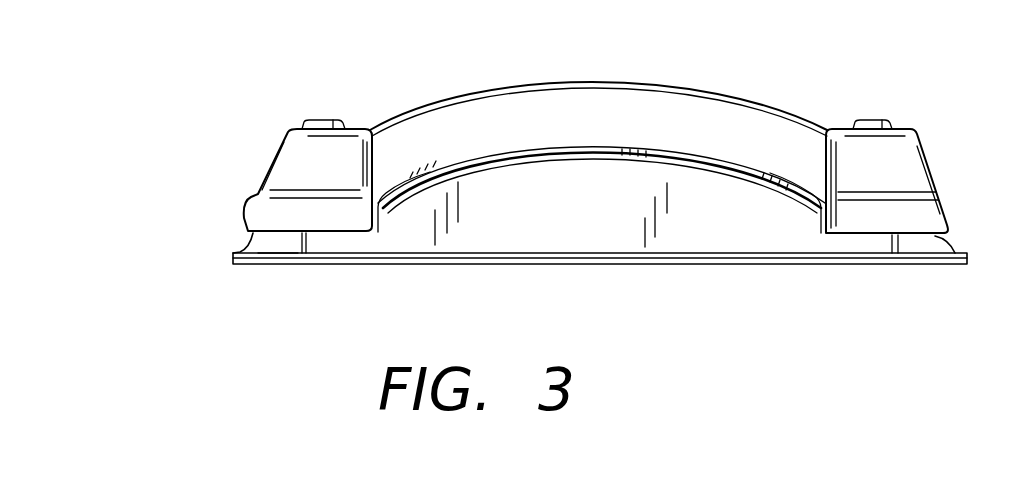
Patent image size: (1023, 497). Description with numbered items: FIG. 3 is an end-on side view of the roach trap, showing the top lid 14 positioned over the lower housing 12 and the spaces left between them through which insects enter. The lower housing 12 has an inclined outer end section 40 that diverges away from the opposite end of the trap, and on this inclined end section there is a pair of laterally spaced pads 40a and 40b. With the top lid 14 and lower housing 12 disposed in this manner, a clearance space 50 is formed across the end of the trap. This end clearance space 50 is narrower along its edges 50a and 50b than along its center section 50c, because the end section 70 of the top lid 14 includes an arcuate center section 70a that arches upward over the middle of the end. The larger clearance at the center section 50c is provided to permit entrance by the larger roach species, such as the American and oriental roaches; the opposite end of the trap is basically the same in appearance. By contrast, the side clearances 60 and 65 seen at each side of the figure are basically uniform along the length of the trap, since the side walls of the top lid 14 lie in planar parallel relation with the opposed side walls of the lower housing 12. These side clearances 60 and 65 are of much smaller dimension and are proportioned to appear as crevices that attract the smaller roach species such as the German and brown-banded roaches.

The lower housing 12 is at (720, 268).
The top lid 14 is at (720, 92).
The outer end section 40 is at (590, 225).
The pad 40a is at (265, 244).
The pad 40b is at (927, 245).
The clearance space 50 is at (589, 163).
The edge of clearance space 50a is at (338, 237).
The edge of clearance space 50b is at (863, 242).
The center section of clearance space 50c is at (641, 166).
The side clearance space 60 is at (245, 237).
The side clearance space 65 is at (957, 238).
The end section of top lid 70 is at (669, 157).
The arcuate center section 70a is at (537, 152).